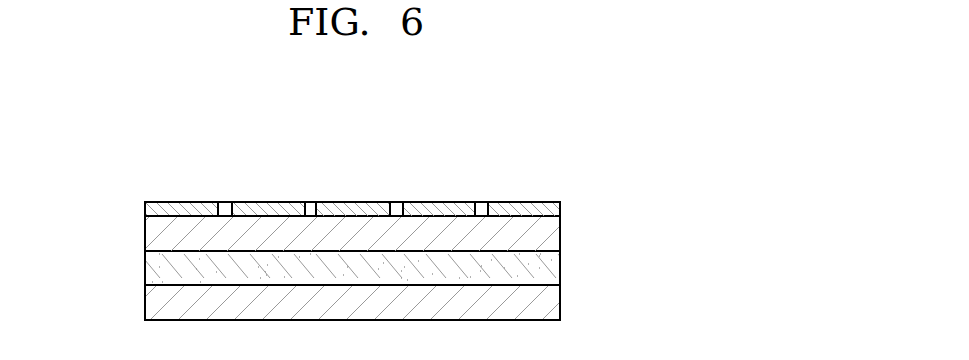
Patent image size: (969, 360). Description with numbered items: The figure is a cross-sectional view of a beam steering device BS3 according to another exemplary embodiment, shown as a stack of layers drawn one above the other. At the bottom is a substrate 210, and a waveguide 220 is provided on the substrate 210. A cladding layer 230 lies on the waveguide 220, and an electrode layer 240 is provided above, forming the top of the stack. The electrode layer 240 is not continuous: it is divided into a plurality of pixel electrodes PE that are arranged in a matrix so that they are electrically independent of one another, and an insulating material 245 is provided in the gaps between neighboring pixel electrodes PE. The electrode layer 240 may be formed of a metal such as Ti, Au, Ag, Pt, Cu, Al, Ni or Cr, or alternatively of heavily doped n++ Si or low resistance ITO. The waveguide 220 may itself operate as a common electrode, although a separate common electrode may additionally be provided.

The substrate 210 is at (560, 303).
The waveguide 220 is at (560, 269).
The cladding layer 230 is at (560, 232).
The electrode layer 240 is at (560, 209).
The insulating material 245 is at (482, 202).
The pixel electrode PE is at (183, 202).
The beam steering device BS3 is at (568, 167).